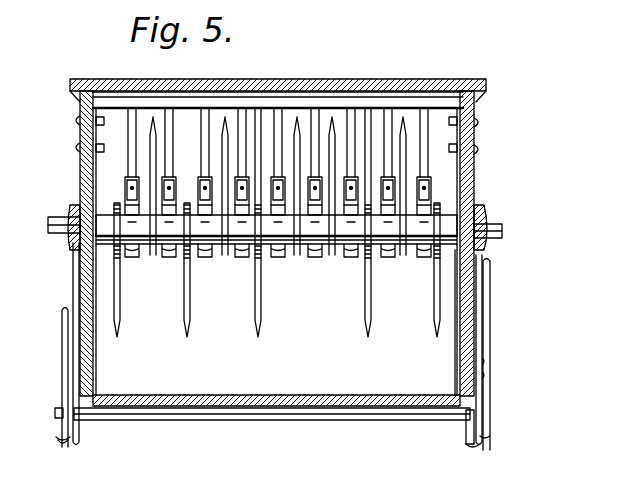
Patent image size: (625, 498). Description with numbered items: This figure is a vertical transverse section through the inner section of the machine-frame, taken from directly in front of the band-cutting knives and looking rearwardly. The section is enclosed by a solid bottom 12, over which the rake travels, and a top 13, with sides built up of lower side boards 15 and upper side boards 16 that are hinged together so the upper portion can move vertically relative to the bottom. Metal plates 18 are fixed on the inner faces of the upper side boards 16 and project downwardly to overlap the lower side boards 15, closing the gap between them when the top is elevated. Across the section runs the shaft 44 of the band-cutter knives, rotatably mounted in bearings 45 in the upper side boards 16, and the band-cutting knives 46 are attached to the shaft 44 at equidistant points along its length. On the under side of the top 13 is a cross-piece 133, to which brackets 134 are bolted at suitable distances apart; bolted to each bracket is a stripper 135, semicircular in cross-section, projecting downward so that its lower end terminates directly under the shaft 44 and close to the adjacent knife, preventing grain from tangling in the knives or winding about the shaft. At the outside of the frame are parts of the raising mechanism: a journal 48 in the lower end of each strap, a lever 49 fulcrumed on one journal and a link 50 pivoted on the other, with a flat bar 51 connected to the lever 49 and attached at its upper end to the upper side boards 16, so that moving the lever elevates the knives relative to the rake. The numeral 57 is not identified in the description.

The solid bottom 12 is at (300, 397).
The top 13 is at (340, 84).
The lower side boards 15 is at (474, 316).
The upper side boards 16 is at (80, 172).
The metal plates 18 is at (456, 342).
The shaft 44 is at (552, 233).
The bearings 45 is at (80, 214).
The band-cutting knives 46 is at (365, 296).
The journal 48 is at (282, 438).
The lever 49 is at (63, 429).
The link 50 is at (466, 430).
The flat bar 51 is at (491, 363).
The arm strip 57 is at (72, 294).
The cross-piece 133 is at (255, 106).
The brackets 134 is at (462, 118).
The stripper 135 is at (418, 252).